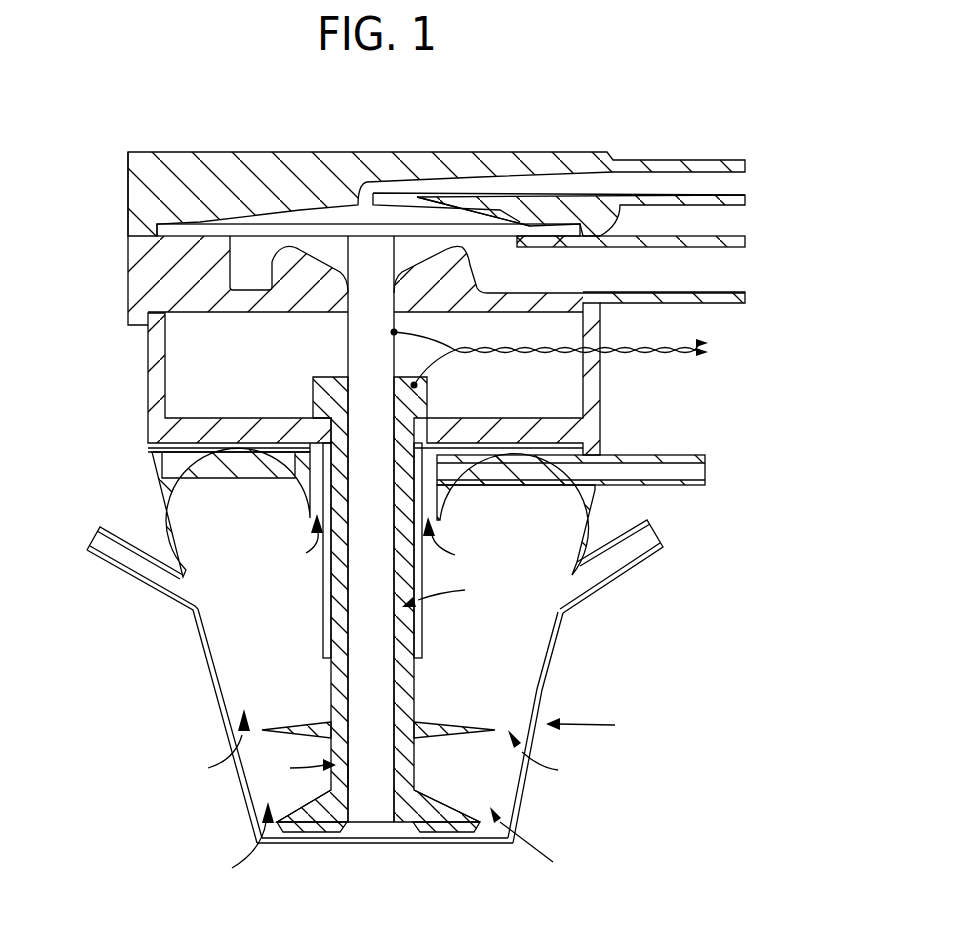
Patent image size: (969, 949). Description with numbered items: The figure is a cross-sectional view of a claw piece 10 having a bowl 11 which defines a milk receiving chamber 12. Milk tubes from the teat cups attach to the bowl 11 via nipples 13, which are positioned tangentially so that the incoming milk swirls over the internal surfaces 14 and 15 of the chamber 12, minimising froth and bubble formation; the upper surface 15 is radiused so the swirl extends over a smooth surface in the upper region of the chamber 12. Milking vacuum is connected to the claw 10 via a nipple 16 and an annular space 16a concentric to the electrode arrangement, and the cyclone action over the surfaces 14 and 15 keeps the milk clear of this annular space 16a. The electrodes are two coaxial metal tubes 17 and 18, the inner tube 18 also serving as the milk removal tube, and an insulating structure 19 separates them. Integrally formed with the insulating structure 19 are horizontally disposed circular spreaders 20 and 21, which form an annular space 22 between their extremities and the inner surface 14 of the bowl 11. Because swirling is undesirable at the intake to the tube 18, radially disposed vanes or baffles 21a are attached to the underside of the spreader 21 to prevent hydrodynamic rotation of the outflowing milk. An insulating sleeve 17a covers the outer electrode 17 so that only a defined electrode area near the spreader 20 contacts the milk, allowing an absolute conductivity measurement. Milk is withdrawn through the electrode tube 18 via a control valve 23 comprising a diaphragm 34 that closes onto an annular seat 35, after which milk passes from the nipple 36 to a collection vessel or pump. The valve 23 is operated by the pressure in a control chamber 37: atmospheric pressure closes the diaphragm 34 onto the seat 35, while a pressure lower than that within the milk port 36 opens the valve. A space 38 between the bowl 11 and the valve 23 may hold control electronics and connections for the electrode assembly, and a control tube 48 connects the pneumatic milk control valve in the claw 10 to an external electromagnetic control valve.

The claw piece 10 is at (597, 724).
The bowl 11 is at (200, 642).
The milk receiving chamber 12 is at (255, 797).
The nipples 13 is at (112, 550).
The inner surface of bowl 14 is at (522, 792).
The upper surface of chamber 15 is at (232, 495).
The nipple 16 is at (678, 470).
The annular space 16a is at (380, 543).
The outer electrode tube 17 is at (331, 685).
The insulating sleeve 17a is at (323, 627).
The inner electrode tube 18 is at (396, 772).
The insulating structure 19 is at (380, 678).
The spreader 20 is at (282, 725).
The spreader 21 is at (323, 823).
The vanes or baffles 21a is at (283, 833).
The annular space 22 is at (385, 798).
The control valve 23 is at (306, 152).
The diaphragm 34 is at (247, 228).
The seat 35 is at (440, 256).
The nipple 36 is at (732, 268).
The control chamber 37 is at (366, 215).
The space 38 is at (570, 395).
The control tube 48 is at (710, 330).